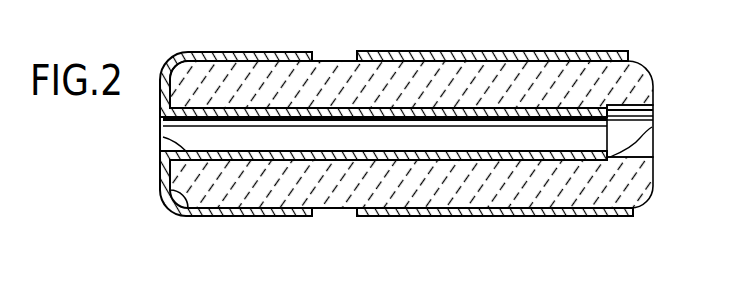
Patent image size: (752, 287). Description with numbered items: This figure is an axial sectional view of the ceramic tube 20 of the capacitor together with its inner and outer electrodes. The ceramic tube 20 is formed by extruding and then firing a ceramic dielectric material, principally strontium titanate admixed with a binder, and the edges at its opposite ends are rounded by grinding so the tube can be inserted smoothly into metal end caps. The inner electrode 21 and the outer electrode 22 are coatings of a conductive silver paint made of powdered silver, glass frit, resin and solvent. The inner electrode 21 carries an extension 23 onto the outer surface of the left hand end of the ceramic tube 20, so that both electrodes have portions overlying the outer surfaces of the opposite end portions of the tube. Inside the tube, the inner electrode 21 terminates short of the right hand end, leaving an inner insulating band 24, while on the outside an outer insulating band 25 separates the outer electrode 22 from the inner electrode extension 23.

The ceramic tube 20 is at (430, 66).
The inner electrode 21 is at (163, 137).
The outer electrode 22 is at (516, 52).
The inner electrode extension 23 is at (269, 53).
The inner insulating band 24 is at (661, 124).
The outer insulating band 25 is at (323, 61).